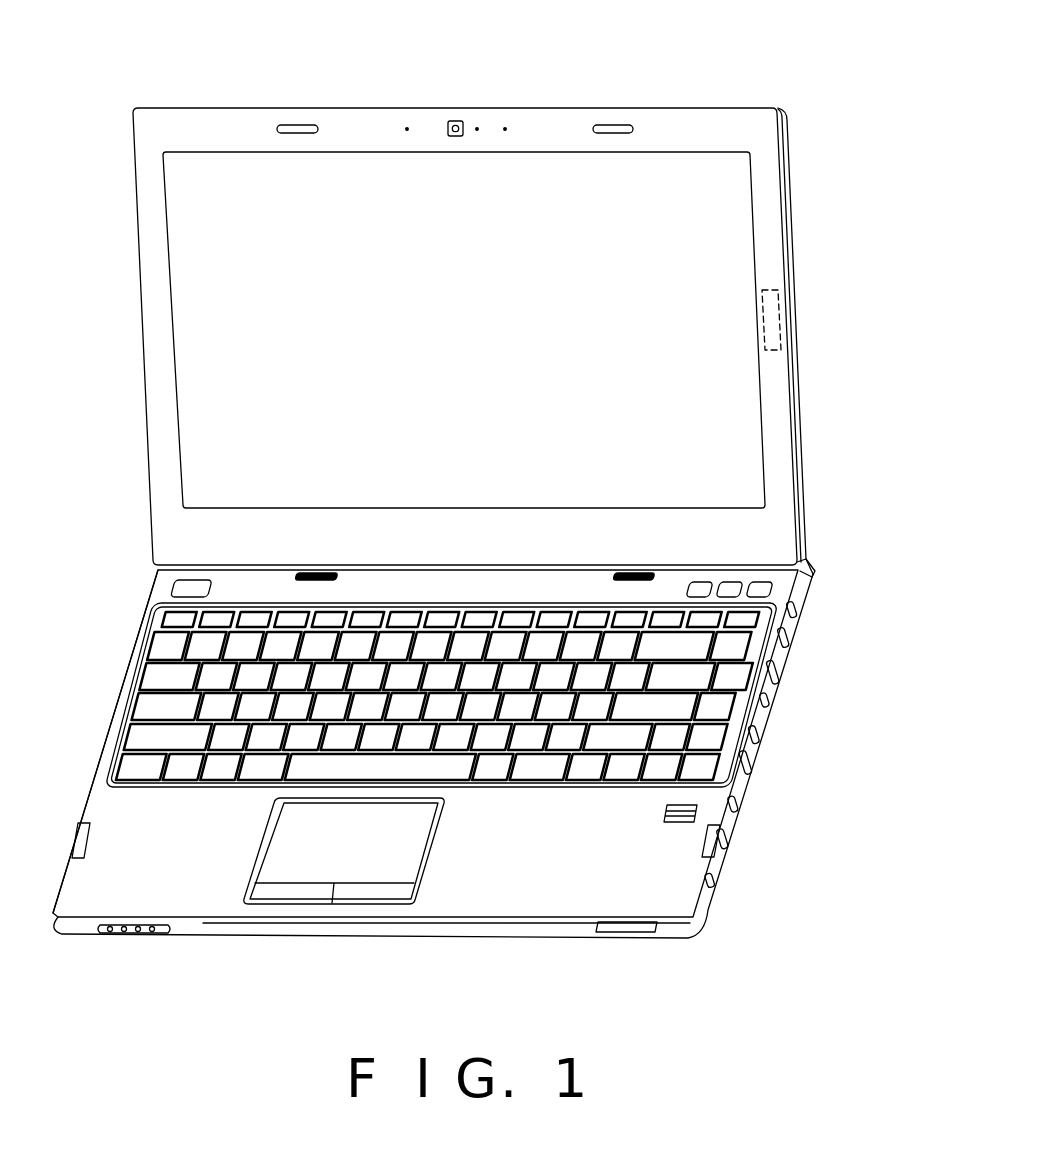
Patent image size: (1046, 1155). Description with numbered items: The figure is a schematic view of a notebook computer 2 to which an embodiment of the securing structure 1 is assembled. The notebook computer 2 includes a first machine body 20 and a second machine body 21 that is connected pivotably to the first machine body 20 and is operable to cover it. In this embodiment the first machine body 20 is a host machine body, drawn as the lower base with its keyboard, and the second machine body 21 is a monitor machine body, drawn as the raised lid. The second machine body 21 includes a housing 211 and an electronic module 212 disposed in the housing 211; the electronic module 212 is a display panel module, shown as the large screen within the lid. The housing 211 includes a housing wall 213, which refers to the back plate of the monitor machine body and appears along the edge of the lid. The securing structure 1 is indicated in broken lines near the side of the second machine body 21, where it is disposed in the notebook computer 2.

The securing structure 1 is at (776, 327).
The notebook computer 2 is at (805, 110).
The first machine body 20 is at (753, 760).
The second machine body 21 is at (547, 94).
The housing 211 is at (480, 118).
The electronic module 212 is at (747, 455).
The housing wall 213 is at (783, 178).